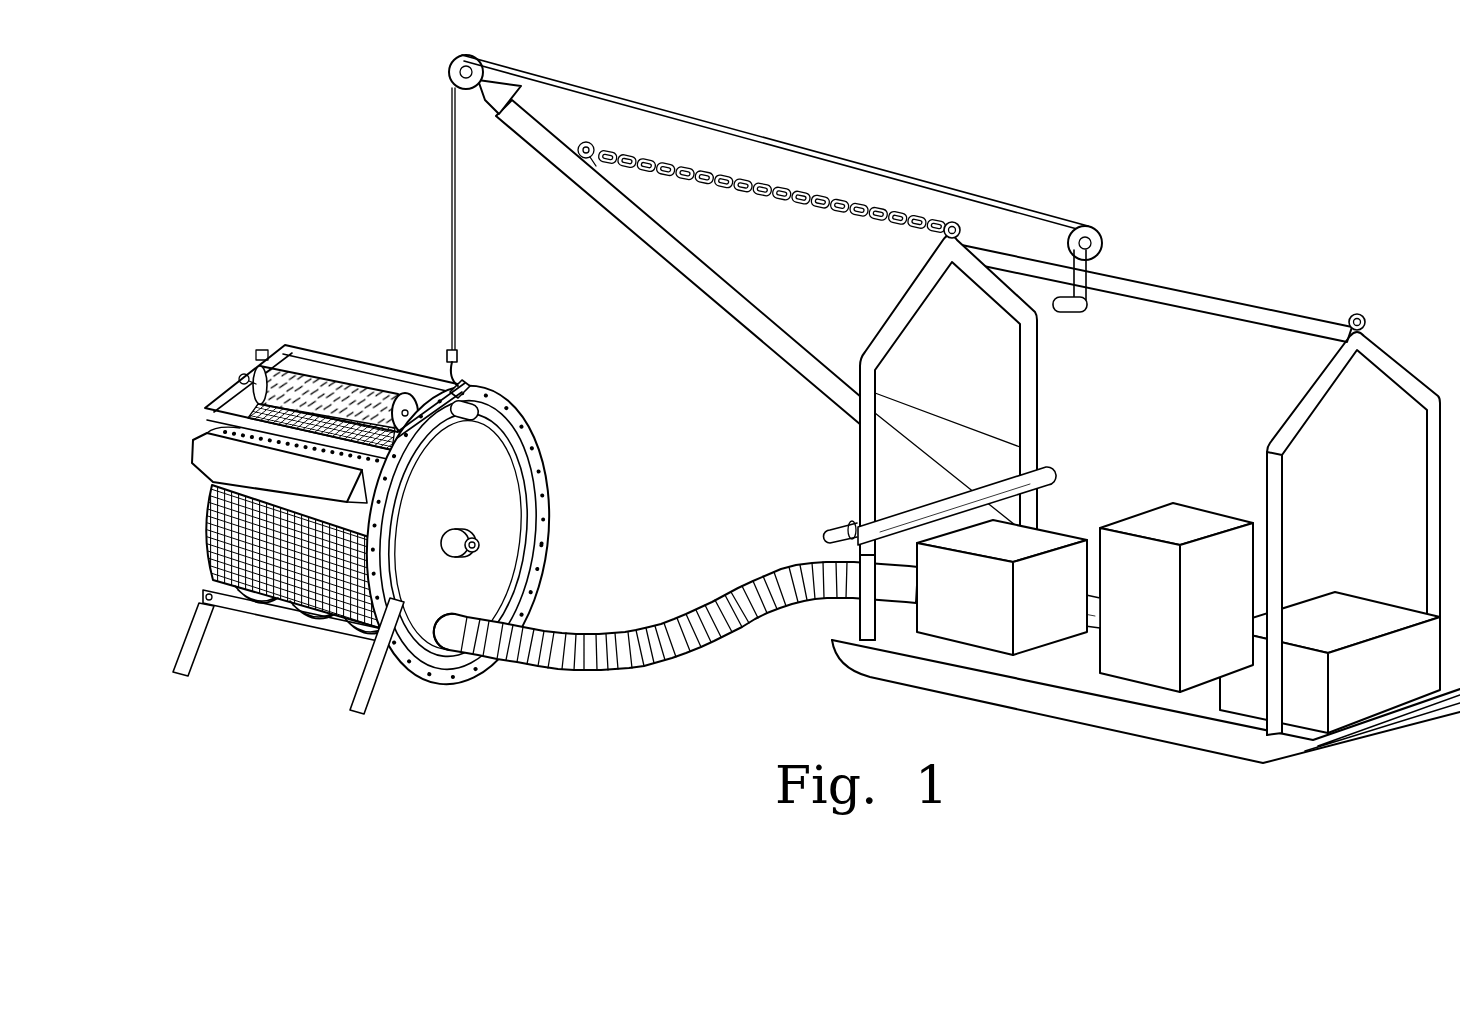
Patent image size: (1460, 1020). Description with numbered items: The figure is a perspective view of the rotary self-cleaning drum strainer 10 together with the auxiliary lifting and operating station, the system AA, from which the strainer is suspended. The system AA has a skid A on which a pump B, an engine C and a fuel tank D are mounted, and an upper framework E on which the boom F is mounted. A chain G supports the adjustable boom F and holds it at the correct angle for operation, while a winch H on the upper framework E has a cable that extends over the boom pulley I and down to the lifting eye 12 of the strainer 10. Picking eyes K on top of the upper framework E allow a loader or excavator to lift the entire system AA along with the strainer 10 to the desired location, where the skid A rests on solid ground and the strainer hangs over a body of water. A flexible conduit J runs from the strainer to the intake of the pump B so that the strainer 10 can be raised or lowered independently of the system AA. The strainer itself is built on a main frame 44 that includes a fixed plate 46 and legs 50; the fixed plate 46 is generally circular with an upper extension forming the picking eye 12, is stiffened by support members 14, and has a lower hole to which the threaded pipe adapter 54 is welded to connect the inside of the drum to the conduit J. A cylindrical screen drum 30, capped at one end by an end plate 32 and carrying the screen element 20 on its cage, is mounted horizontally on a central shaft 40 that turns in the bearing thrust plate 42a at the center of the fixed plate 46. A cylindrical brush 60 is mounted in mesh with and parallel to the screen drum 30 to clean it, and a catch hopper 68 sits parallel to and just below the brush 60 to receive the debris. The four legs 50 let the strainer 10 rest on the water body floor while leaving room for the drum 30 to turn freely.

The rotary self-cleaning drum strainer 10 is at (355, 272).
The picking eye 12 is at (480, 383).
The support members 14 is at (540, 543).
The screen element 20 is at (317, 603).
The screen drum 30 is at (263, 603).
The end plate 32 is at (203, 527).
The central shaft 40 is at (477, 547).
The bearing thrust plate 42a is at (467, 527).
The main frame 44 is at (392, 378).
The fixed plate 46 is at (538, 440).
The legs 50 is at (198, 647).
The threaded pipe adapter 54 is at (460, 630).
The brush 60 is at (323, 363).
The catch hopper 68 is at (213, 455).
The skid A is at (1035, 717).
The system AA is at (1120, 128).
The pump B is at (468, 358).
The engine C is at (1195, 517).
The fuel tank D is at (1365, 607).
The upper framework E is at (1222, 295).
The boom F is at (702, 297).
The chain G is at (778, 205).
The winch H is at (1095, 218).
The boom pulley I is at (450, 68).
The flexible conduit J is at (693, 663).
The picking eyes K is at (950, 225).